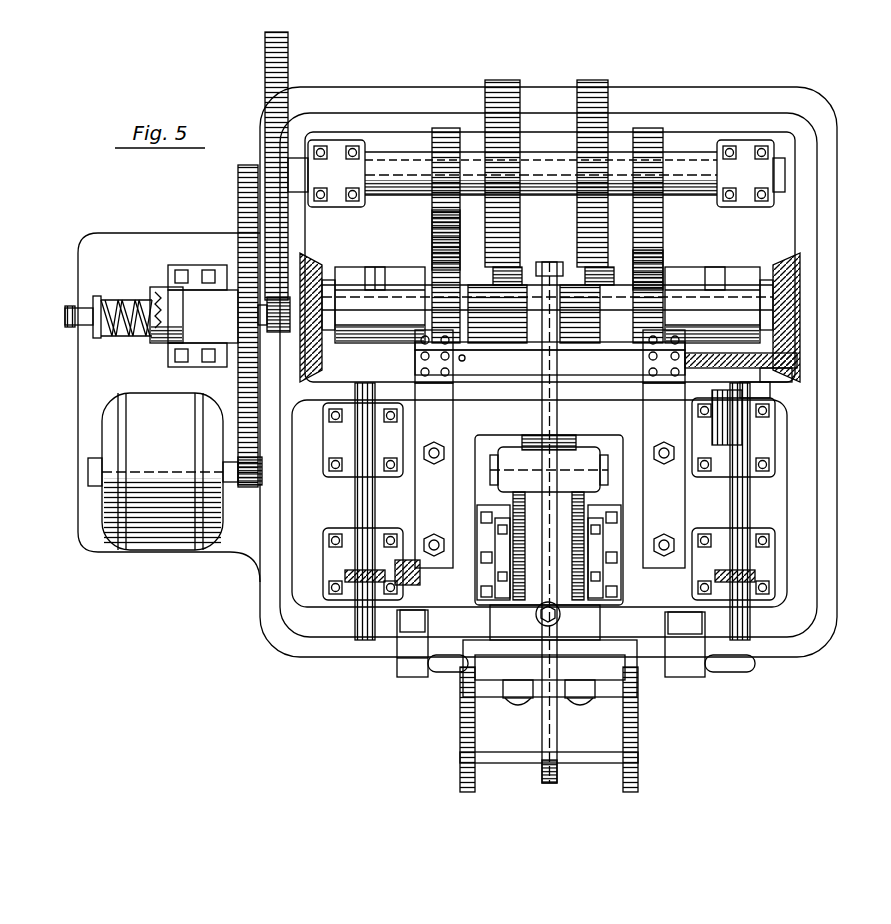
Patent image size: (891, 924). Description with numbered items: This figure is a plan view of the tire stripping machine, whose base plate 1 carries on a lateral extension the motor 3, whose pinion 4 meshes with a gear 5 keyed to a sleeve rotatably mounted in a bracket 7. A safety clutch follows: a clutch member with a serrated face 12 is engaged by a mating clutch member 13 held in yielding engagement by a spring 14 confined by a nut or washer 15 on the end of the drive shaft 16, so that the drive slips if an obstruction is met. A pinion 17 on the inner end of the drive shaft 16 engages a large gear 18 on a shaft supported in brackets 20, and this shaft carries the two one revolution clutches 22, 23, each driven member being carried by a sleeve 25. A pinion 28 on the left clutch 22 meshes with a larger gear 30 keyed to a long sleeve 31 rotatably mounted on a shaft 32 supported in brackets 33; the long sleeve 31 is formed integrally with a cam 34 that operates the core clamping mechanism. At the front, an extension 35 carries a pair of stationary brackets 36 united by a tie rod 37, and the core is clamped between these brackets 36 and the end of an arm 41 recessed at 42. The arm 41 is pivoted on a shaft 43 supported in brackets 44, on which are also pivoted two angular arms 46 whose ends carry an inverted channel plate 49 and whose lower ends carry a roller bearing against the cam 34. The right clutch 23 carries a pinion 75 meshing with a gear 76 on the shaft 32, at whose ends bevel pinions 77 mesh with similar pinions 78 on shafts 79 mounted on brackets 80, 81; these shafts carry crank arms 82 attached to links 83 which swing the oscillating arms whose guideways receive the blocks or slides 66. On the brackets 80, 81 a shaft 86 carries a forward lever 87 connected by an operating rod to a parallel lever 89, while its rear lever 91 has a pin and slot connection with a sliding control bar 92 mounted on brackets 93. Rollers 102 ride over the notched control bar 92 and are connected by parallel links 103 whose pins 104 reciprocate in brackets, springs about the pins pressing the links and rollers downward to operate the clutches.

The base plate 1 is at (778, 95).
The motor 3 is at (163, 471).
The pinion 4 is at (252, 487).
The gear 5 is at (241, 386).
The bracket 7 is at (194, 358).
The serrated face 12 is at (170, 290).
The mating clutch member 13 is at (153, 285).
The spring 14 is at (116, 300).
The nut or washer 15 is at (84, 314).
The drive shaft 16 is at (110, 330).
The pinion 17 is at (283, 335).
The large gear 18 is at (288, 52).
The brackets 20 is at (541, 173).
The one revolution clutch 22 is at (502, 80).
The one revolution clutch 23 is at (600, 98).
The sleeve 25 is at (402, 160).
The pinion 28 is at (442, 127).
The gear 30 is at (432, 225).
The long sleeve 31 is at (483, 290).
The shaft 32 is at (350, 290).
The brackets 33 is at (395, 285).
The cam 34 is at (548, 262).
The extension 35 is at (630, 705).
The stationary brackets 36 is at (460, 732).
The tie rod 37 is at (596, 763).
The arm 41 is at (562, 612).
The recess 42 is at (557, 768).
The shaft 43 is at (598, 450).
The brackets 44 is at (585, 495).
The angular arms 46 is at (538, 440).
The inverted channel plate 49 is at (610, 583).
The blocks or slides 66 is at (515, 698).
The pinion 75 is at (655, 128).
The gear 76 is at (663, 258).
The bevel pinions 77 is at (306, 266).
The bevel pinions 78 is at (792, 376).
The shafts 79 is at (760, 640).
The brackets 80 is at (848, 440).
The brackets 81 is at (333, 547).
The crank arms 82 is at (398, 660).
The links 83 is at (452, 672).
The shaft 86 is at (750, 490).
The lever 87 is at (755, 576).
The parallel lever 89 is at (400, 585).
The lever 91 is at (770, 392).
The sliding control bar 92 is at (797, 355).
The brackets 93 is at (456, 420).
The roller 102 is at (460, 358).
The parallel links 103 is at (532, 344).
The pins 104 is at (445, 398).